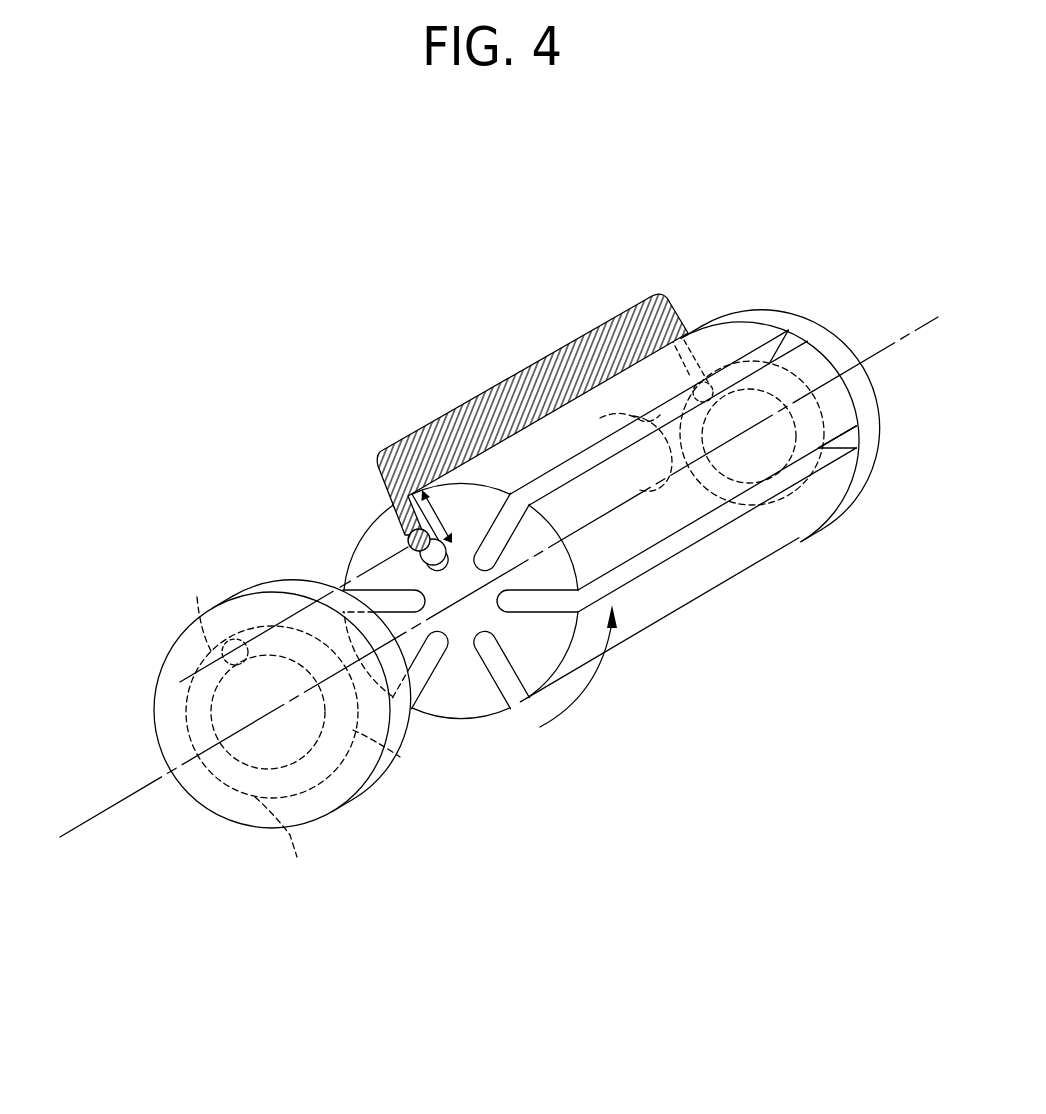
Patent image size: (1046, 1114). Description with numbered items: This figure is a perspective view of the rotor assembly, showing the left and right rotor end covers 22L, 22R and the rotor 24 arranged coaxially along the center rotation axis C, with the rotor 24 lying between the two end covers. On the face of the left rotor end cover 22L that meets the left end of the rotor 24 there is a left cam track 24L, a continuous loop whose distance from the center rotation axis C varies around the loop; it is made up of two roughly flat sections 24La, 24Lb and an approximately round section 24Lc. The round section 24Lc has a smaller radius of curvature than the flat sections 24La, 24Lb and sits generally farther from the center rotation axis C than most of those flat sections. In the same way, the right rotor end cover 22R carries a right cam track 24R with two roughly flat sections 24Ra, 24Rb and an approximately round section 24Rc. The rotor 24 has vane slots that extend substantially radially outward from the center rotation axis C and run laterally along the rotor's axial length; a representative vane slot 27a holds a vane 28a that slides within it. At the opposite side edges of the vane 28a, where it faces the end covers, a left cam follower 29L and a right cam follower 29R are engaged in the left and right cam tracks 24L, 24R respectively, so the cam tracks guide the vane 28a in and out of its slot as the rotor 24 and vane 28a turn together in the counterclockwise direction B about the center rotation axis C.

The left rotor end cover 22L is at (246, 827).
The right rotor end cover 22R is at (853, 502).
The rotor 24 is at (712, 589).
The left cam track 24L is at (246, 666).
The flat section of left cam track 24La is at (291, 846).
The flat section of left cam track 24Lb is at (397, 753).
The round section of left cam track 24Lc is at (187, 702).
The right cam track 24R is at (636, 416).
The flat section of right cam track 24Ra is at (726, 524).
The flat section of right cam track 24Rb is at (823, 410).
The round section of right cam track 24Rc is at (667, 456).
The vane slot 27a is at (455, 516).
The vane 28a is at (533, 365).
The left cam follower 29L is at (407, 538).
The right cam follower 29R is at (697, 373).
The counterclockwise direction B is at (578, 666).
The center rotation axis C is at (499, 577).